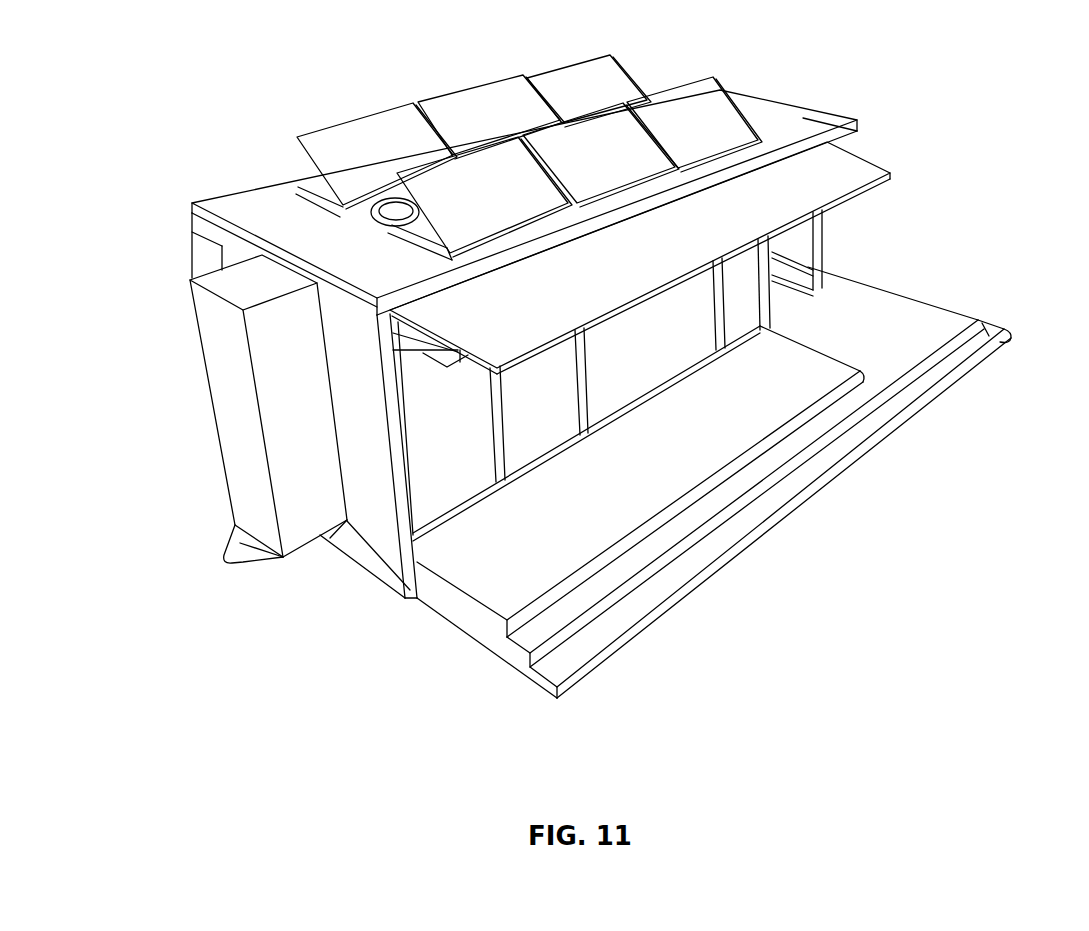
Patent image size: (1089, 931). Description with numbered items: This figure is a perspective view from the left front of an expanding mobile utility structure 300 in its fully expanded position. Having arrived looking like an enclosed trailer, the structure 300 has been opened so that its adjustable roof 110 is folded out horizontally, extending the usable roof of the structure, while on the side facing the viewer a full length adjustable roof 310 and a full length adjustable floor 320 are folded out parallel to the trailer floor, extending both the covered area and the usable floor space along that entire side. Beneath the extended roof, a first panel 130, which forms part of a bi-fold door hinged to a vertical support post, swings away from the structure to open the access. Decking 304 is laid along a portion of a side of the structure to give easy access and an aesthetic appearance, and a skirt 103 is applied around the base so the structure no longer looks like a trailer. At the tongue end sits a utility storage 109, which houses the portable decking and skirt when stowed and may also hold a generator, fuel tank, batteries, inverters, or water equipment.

The expanding mobile utility structure 300 is at (226, 68).
The adjustable roof 110 is at (817, 130).
The full length adjustable roof 310 is at (870, 168).
The first panel 130 is at (838, 272).
The decking 304 is at (993, 323).
The adjustable floor 320 is at (480, 647).
The skirt 103 is at (365, 573).
The utility storage 109 is at (227, 398).